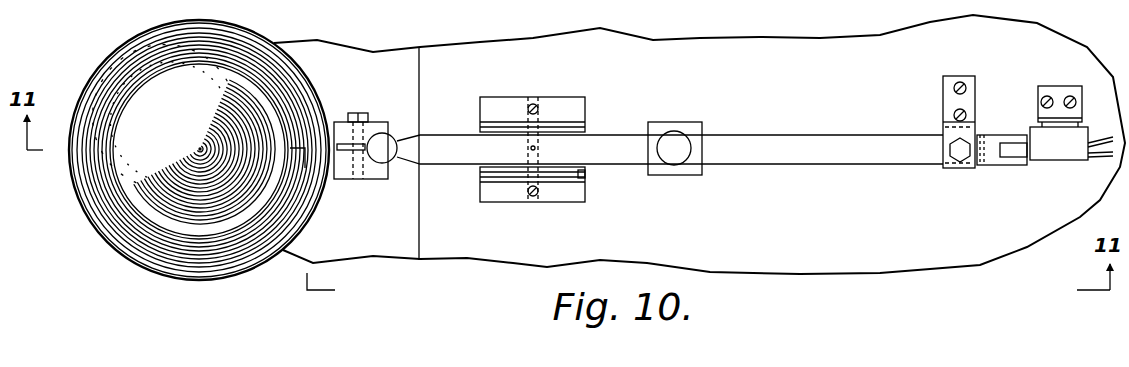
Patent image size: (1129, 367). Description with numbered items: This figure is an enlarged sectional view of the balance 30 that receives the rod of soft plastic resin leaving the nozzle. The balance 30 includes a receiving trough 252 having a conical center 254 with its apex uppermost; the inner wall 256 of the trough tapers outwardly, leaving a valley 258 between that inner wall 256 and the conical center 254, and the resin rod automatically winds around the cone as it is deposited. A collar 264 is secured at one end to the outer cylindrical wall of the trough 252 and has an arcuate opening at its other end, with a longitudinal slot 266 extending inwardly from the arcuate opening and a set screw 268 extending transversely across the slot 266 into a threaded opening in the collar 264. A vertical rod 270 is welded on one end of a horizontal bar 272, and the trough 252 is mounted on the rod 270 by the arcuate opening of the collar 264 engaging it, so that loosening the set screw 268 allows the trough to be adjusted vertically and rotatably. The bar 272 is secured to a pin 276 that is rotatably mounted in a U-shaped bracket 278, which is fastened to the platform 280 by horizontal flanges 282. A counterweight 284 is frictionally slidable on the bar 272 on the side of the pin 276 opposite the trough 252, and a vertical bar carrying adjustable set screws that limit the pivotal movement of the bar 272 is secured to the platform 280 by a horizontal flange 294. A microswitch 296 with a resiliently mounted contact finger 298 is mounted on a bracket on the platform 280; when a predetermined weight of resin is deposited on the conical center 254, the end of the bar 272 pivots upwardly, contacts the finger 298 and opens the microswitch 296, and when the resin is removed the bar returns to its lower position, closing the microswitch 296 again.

The balance 30 is at (232, 305).
The receiving trough 252 is at (170, 281).
The conical center 254 is at (178, 156).
The inner wall 256 is at (245, 247).
The valley 258 is at (143, 210).
The collar 264 is at (341, 181).
The longitudinal slot 266 is at (341, 144).
The set screw 268 is at (367, 114).
The vertical rod 270 is at (390, 164).
The horizontal bar 272 is at (785, 135).
The pin 276 is at (528, 122).
The U-shaped bracket 278 is at (585, 174).
The platform 280 is at (769, 230).
The horizontal flanges 282 is at (585, 110).
The counterweight 284 is at (668, 122).
The horizontal flange 294 is at (943, 110).
The microswitch 296 is at (1060, 160).
The contact finger 298 is at (1005, 152).